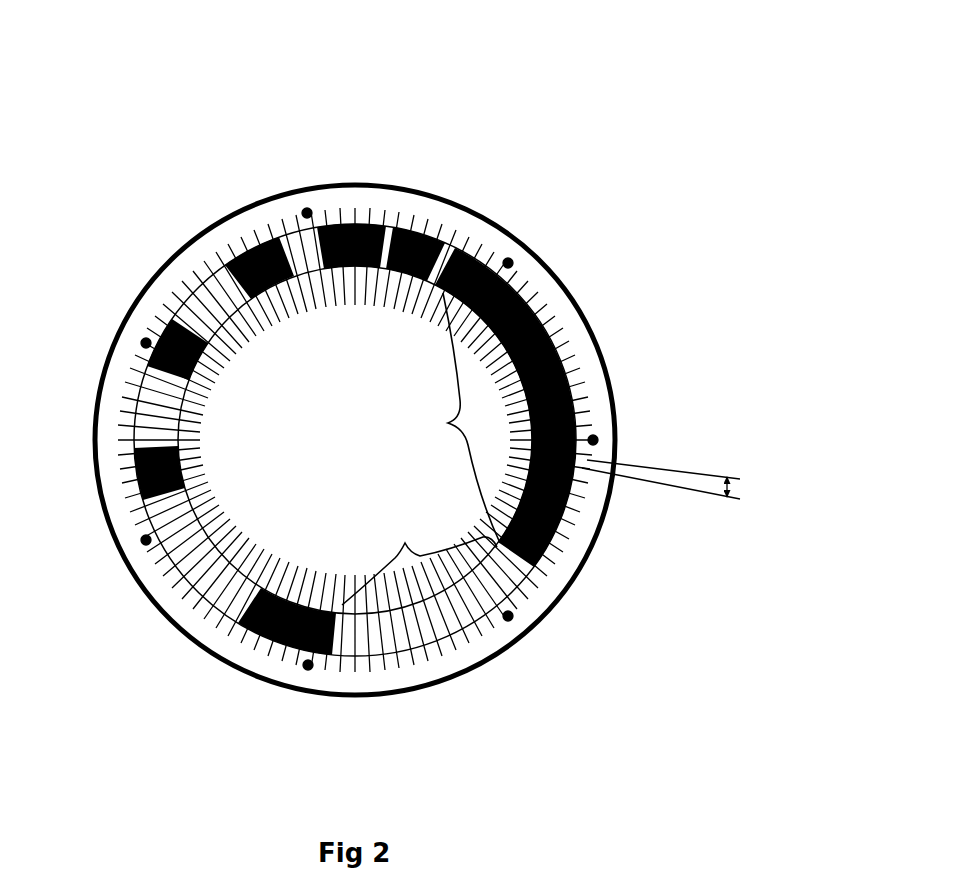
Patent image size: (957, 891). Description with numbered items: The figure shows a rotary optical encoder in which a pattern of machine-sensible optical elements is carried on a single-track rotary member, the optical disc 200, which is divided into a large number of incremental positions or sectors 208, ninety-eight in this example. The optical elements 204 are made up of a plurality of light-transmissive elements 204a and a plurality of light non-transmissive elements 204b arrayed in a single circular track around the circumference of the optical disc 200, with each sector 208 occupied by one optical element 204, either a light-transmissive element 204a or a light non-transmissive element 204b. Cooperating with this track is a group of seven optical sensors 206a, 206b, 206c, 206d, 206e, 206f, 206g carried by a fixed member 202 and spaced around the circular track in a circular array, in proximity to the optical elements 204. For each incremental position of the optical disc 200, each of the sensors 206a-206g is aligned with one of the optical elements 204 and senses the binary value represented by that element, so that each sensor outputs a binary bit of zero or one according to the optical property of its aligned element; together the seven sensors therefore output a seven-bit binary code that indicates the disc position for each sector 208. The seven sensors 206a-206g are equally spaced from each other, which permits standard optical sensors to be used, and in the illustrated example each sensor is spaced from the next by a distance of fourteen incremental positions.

The optical disc 200 is at (443, 401).
The fixed member 202 is at (587, 310).
The optical elements 204 is at (375, 500).
The light-transmissive elements 204a is at (419, 559).
The light non-transmissive elements 204b is at (446, 418).
The sensor 206a is at (310, 207).
The sensor 206b is at (511, 258).
The sensor 206c is at (603, 436).
The sensor 206d is at (516, 624).
The sensor 206e is at (306, 672).
The sensor 206f is at (147, 548).
The sensor 206g is at (149, 331).
The incremental positions 208 is at (740, 477).